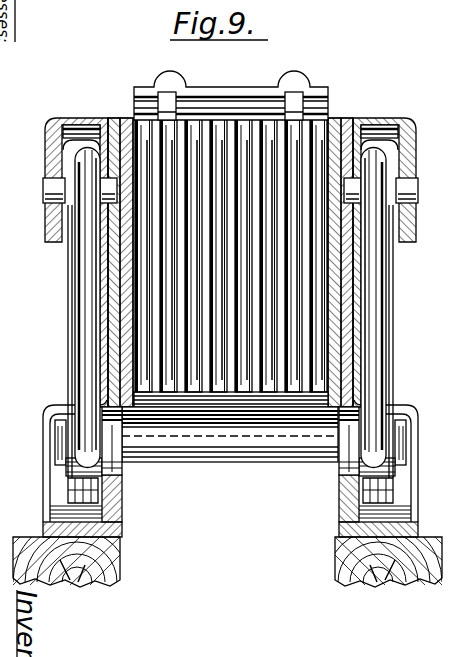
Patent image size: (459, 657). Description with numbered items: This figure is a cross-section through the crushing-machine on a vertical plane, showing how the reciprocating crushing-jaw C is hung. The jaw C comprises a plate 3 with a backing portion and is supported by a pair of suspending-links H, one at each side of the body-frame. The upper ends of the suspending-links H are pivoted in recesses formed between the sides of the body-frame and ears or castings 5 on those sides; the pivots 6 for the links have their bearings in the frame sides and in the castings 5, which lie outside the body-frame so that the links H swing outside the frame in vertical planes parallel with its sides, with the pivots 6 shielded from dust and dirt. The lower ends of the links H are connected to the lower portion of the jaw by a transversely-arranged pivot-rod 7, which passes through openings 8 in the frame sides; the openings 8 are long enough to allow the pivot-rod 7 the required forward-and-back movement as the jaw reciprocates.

The reciprocating crushing-jaw C is at (243, 95).
The plate 3 is at (231, 256).
The ears or castings 5 is at (47, 150).
The pivots 6 is at (44, 192).
The pivot-rod 7 is at (62, 439).
The openings 8 is at (116, 462).
The suspending-links H is at (70, 280).